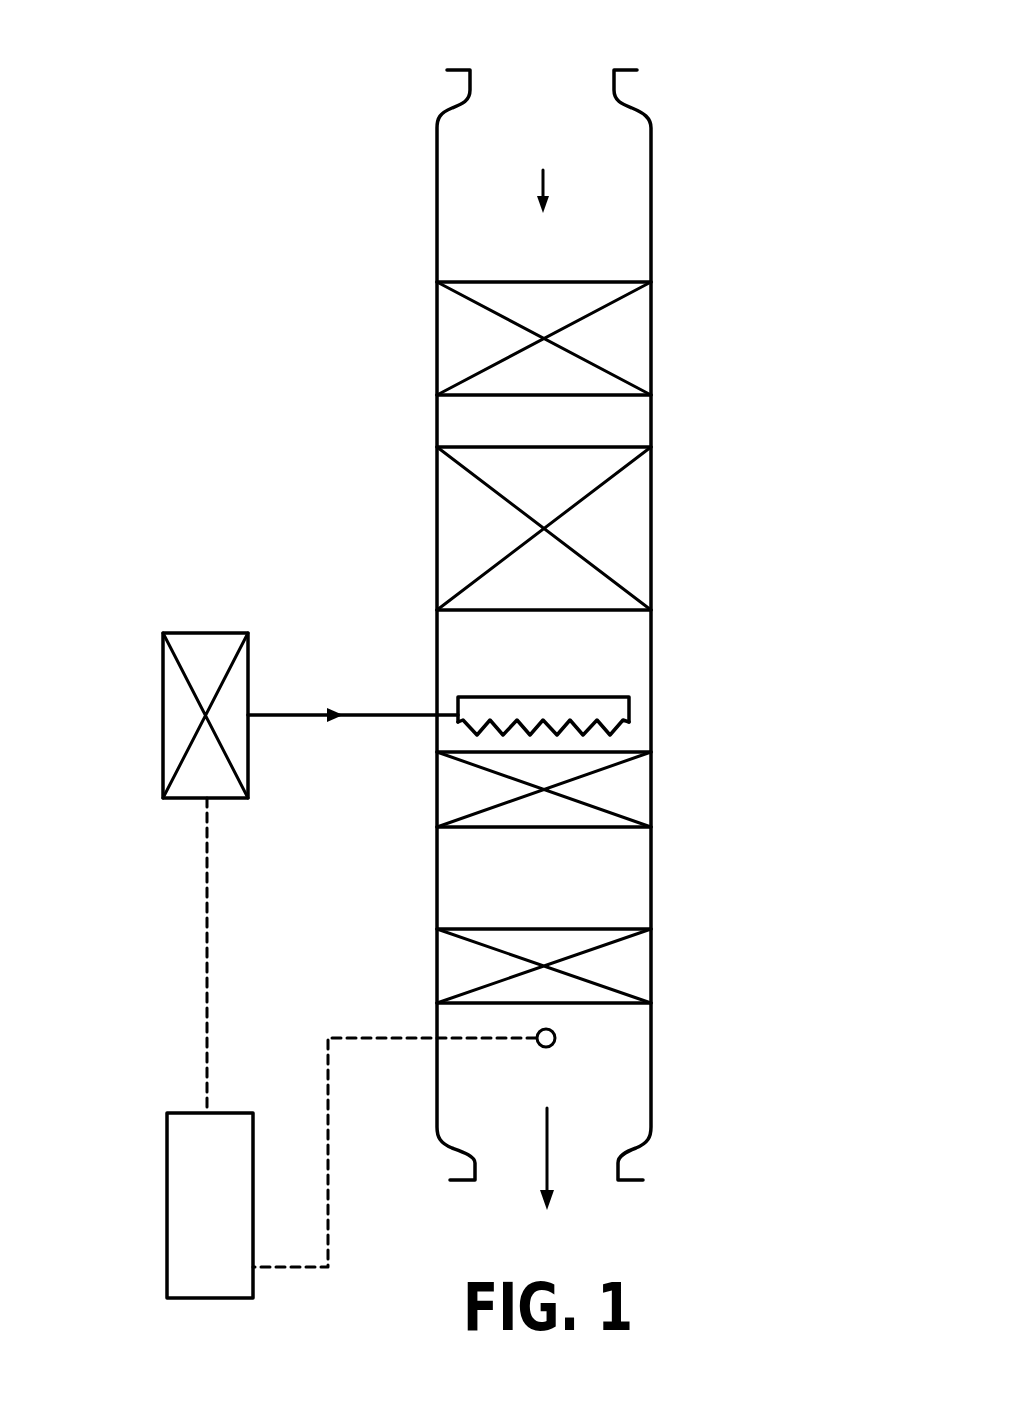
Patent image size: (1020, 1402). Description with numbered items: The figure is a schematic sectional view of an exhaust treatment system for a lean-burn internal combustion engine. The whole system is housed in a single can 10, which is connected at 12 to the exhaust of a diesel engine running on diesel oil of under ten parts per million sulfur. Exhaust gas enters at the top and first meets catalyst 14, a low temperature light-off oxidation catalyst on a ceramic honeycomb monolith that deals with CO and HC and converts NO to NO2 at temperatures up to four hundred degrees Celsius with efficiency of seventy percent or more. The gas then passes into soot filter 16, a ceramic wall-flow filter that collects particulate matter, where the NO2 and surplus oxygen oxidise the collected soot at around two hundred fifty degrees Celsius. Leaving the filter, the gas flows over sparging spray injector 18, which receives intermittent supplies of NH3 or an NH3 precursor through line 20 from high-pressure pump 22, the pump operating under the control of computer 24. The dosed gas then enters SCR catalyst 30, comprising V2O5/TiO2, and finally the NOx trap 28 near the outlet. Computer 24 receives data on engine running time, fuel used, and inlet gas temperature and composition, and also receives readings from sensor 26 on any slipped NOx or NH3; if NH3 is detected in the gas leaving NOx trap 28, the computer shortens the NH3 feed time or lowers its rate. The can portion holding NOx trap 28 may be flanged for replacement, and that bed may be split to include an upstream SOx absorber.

The can 10 is at (651, 165).
The exhaust connection 12 is at (546, 86).
The oxidation catalyst 14 is at (560, 320).
The soot filter 16 is at (560, 492).
The sparging spray injector 18 is at (550, 697).
The line 20 is at (383, 713).
The high-pressure pump 22 is at (163, 715).
The computer 24 is at (228, 1222).
The sensor 26 is at (556, 1036).
The NOx trap 28 is at (617, 927).
The SCR catalyst 30 is at (651, 775).